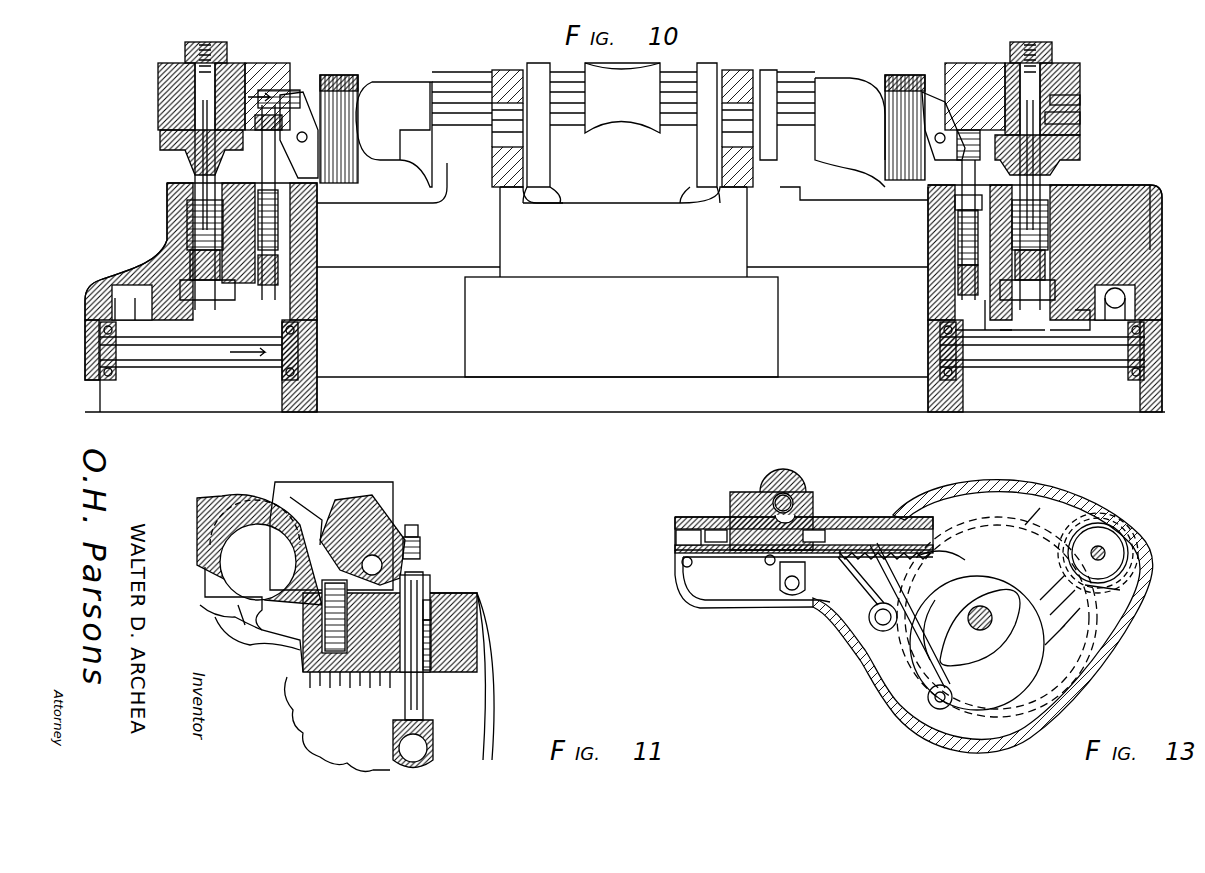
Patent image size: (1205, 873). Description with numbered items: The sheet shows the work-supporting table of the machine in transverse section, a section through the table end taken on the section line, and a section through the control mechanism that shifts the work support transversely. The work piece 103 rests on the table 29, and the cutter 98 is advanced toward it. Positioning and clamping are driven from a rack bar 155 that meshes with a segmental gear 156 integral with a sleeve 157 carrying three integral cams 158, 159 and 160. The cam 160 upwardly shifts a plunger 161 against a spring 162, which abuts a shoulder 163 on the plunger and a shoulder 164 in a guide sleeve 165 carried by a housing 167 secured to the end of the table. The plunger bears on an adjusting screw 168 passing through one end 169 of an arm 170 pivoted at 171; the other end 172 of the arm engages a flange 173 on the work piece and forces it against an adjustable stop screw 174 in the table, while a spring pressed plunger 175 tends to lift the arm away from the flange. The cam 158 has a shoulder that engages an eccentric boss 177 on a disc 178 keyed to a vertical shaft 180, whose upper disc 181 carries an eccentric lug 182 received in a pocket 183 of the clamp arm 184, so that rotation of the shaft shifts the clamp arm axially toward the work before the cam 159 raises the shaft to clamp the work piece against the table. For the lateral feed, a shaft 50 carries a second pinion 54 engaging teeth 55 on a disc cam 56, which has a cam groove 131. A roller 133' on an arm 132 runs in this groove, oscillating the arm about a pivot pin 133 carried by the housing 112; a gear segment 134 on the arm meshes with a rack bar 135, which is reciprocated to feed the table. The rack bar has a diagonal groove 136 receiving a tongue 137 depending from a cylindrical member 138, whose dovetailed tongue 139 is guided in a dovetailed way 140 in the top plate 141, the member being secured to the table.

In FIG. 11, the table 29 is at (220, 620).
In FIG. 13, the shaft 50 is at (1108, 553).
In FIG. 13, the second pinion 54 is at (1120, 535).
In FIG. 13, the teeth 55 is at (1125, 588).
In FIG. 13, the disc cam 56 is at (1083, 505).
In FIG. 10, the cutter 98 is at (350, 72).
In FIG. 10, the work piece 103 is at (618, 122).
In FIG. 11, the work piece 103 is at (185, 498).
In FIG. 13, the housing 112 is at (1130, 622).
In FIG. 13, the cam groove 131 is at (1015, 670).
In FIG. 13, the arm 132 is at (895, 650).
In FIG. 13, the pivot pin 133 is at (848, 605).
In FIG. 13, the roller 133' is at (957, 683).
In FIG. 13, the gear segment 134 is at (920, 560).
In FIG. 13, the rack bar 135 is at (945, 532).
In FIG. 13, the diagonal groove 136 is at (815, 528).
In FIG. 13, the tongue 137 is at (765, 560).
In FIG. 13, the cylindrical member 138 is at (783, 490).
In FIG. 13, the dovetailed tongue 139 is at (838, 492).
In FIG. 13, the dovetailed way 140 is at (730, 512).
In FIG. 13, the top plate 141 is at (680, 517).
In FIG. 10, the rack bar 155 is at (1150, 270).
In FIG. 10, the segmental gear 156 is at (1150, 296).
In FIG. 10, the sleeve 157 is at (1095, 380).
In FIG. 10, the cam 158 is at (1075, 335).
In FIG. 10, the cam 159 is at (1015, 335).
In FIG. 10, the cam 160 is at (975, 318).
In FIG. 11, the cam 160 is at (392, 740).
In FIG. 10, the plunger 161 is at (935, 200).
In FIG. 11, the plunger 161 is at (425, 587).
In FIG. 10, the spring 162 is at (960, 225).
In FIG. 11, the spring 162 is at (450, 615).
In FIG. 10, the shoulder 163 is at (935, 288).
In FIG. 11, the shoulder 163 is at (403, 690).
In FIG. 10, the shoulder 164 is at (935, 205).
In FIG. 11, the shoulder 164 is at (440, 600).
In FIG. 11, the guide sleeve 165 is at (475, 640).
In FIG. 11, the housing 167 is at (485, 665).
In FIG. 11, the adjusting screw 168 is at (418, 520).
In FIG. 11, the end of arm 169 is at (428, 545).
In FIG. 10, the arm 170 is at (928, 102).
In FIG. 11, the arm 170 is at (400, 510).
In FIG. 10, the pivot 171 is at (935, 140).
In FIG. 11, the pivot 171 is at (385, 515).
In FIG. 11, the end of arm 172 is at (335, 500).
In FIG. 11, the flange 173 is at (290, 497).
In FIG. 11, the stop screw 174 is at (240, 630).
In FIG. 11, the spring pressed plunger 175 is at (303, 668).
In FIG. 10, the boss 177 is at (1150, 250).
In FIG. 10, the disc 178 is at (1150, 232).
In FIG. 10, the vertical shaft 180 is at (1060, 160).
In FIG. 10, the disc 181 is at (1078, 135).
In FIG. 10, the eccentric lug 182 is at (1075, 120).
In FIG. 10, the pocket 183 is at (1080, 96).
In FIG. 10, the clamp arm 184 is at (280, 60).